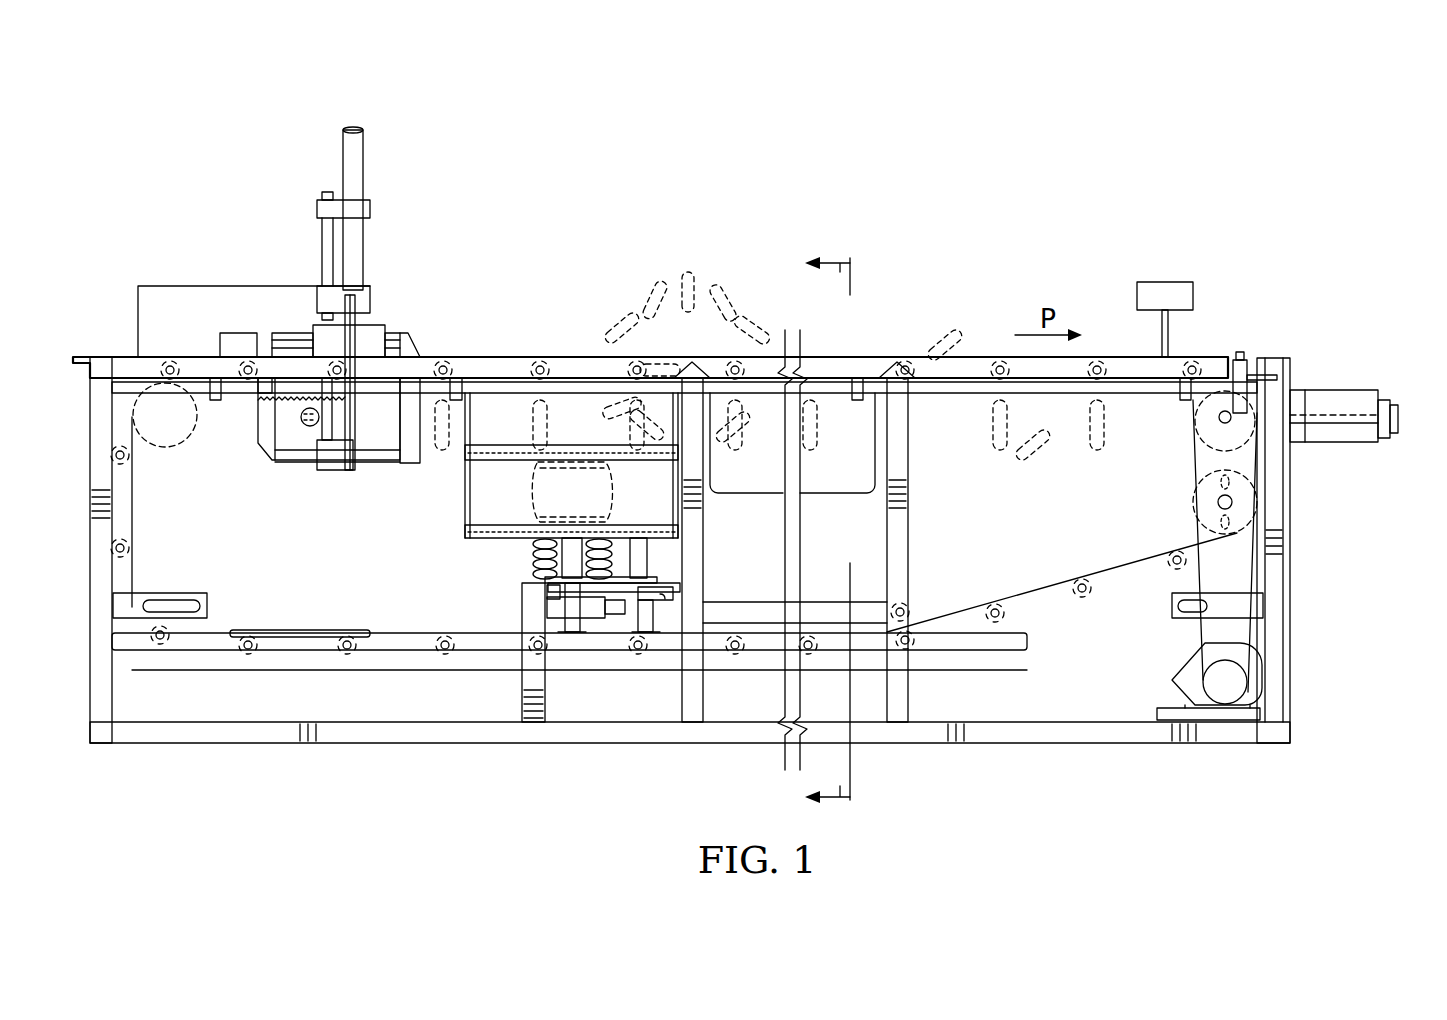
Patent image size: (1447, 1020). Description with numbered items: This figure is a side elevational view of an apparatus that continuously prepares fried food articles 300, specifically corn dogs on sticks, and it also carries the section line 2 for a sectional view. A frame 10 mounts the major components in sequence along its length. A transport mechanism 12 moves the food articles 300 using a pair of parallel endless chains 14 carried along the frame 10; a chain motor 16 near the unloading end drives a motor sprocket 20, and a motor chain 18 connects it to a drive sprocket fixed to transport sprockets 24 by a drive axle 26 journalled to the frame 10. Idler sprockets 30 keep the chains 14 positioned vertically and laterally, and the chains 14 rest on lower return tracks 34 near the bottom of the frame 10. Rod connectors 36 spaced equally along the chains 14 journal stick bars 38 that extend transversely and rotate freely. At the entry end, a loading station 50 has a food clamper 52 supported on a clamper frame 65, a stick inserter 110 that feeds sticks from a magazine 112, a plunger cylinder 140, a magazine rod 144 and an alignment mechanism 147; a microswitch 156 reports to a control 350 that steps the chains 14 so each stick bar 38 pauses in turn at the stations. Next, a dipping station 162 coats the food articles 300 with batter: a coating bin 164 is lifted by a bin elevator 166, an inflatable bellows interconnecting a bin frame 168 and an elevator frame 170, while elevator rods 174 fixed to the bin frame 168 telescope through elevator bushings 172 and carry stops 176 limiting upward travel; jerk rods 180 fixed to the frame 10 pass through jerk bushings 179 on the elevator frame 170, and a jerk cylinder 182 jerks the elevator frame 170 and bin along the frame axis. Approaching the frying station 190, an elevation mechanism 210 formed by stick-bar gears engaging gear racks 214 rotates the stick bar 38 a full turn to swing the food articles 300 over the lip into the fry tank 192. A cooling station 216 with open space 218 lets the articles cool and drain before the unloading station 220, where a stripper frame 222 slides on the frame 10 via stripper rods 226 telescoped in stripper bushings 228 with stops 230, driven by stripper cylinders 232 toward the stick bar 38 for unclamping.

The frame 10 is at (1068, 722).
The transport mechanism 12 is at (292, 614).
The endless chains 14 is at (1042, 592).
The chain motor 16 is at (1225, 645).
The motor chain 18 is at (1253, 570).
The motor sprocket 20 is at (1185, 666).
The transport sprockets 24 is at (1212, 440).
The drive axle 26 is at (1217, 418).
The idler sprockets 30 is at (168, 440).
The lower return tracks 34 is at (445, 648).
The rod connectors 36 is at (1005, 613).
The stick bars 38 is at (1092, 585).
The loading station 50 is at (336, 298).
The food clamper 52 is at (310, 428).
The clamper frame 65 is at (333, 480).
The stick inserter 110 is at (152, 260).
The magazine 112 is at (270, 297).
The plunger cylinder 140 is at (365, 164).
The magazine rod 144 is at (110, 352).
The alignment mechanism 147 is at (358, 323).
The microswitch 156 is at (235, 342).
The dipping station 162 is at (582, 529).
The coating bin 164 is at (475, 498).
The bin elevator 166 is at (535, 553).
The bin frame 168 is at (465, 532).
The elevator frame 170 is at (545, 580).
The elevator bushings 172 is at (652, 548).
The elevator rods 174 is at (572, 632).
The stops 176 is at (612, 620).
The jerk bushings 179 is at (668, 602).
The jerk rods 180 is at (682, 573).
The jerk cylinder 182 is at (557, 610).
The frying station 190 is at (864, 425).
The fry tank 192 is at (848, 497).
The elevation mechanism 210 is at (913, 341).
The gear racks 214 is at (690, 358).
The cooling station 216 is at (1144, 290).
The open space 218 is at (1020, 512).
The unloading station 220 is at (1364, 389).
The stripper frame 222 is at (1392, 441).
The stripper rods 226 is at (1382, 400).
The stripper bushings 228 is at (1312, 390).
The stops 230 is at (1397, 406).
The stripper cylinders 232 is at (1305, 444).
The food articles 300 is at (615, 330).
The control 350 is at (1158, 282).
The section line 2 is at (817, 532).